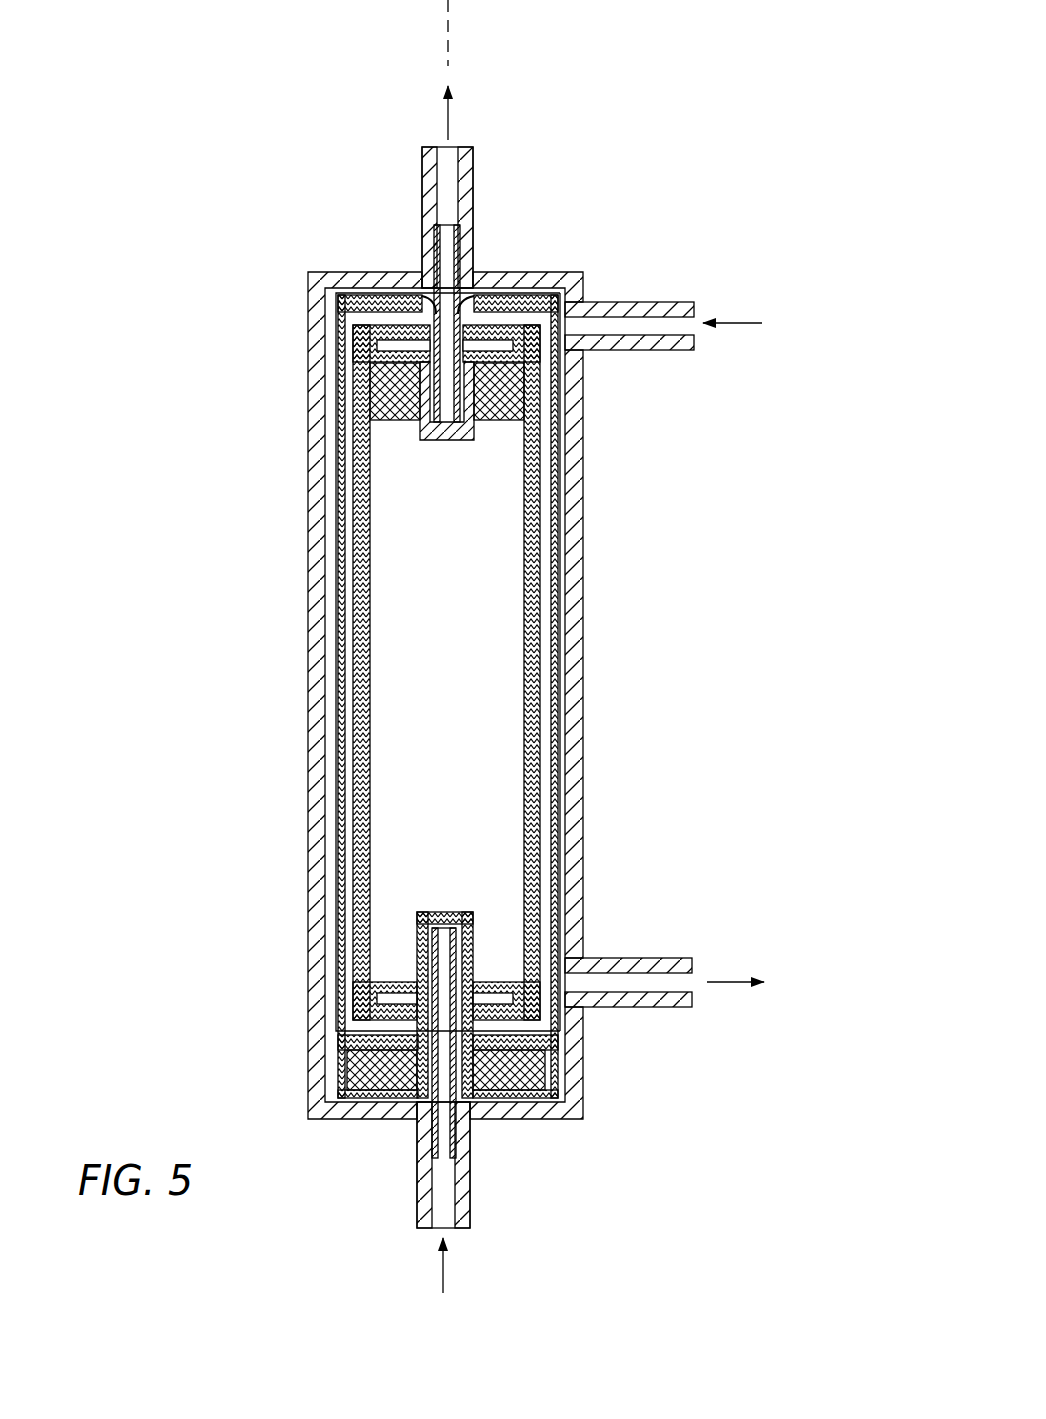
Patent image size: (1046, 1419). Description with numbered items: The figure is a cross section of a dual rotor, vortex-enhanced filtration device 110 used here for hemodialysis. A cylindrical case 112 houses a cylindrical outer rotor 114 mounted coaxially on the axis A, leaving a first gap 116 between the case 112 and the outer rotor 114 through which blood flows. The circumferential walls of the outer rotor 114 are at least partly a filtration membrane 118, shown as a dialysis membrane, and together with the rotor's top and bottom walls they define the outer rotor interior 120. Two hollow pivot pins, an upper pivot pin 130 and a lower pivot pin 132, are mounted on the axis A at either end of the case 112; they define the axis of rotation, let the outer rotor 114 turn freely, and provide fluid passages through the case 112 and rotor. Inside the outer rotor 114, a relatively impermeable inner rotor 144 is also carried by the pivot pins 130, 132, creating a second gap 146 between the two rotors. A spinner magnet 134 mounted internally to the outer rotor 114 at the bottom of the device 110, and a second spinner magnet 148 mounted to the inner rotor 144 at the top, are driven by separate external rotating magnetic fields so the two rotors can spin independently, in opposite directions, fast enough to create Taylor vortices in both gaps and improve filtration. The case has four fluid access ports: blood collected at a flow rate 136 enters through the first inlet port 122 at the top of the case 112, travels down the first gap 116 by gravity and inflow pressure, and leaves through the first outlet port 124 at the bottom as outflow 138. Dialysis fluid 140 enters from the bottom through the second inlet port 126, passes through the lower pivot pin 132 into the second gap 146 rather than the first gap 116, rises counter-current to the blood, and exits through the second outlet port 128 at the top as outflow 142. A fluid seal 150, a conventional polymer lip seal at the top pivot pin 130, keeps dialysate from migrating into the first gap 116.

The filtration device 110 is at (690, 110).
The cylindrical case 112 is at (452, 695).
The outer rotor 114 is at (332, 745).
The first gap 116 is at (560, 668).
The filtration membrane 118 is at (558, 533).
The outer rotor interior 120 is at (543, 327).
The first inlet port 122 is at (637, 300).
The first outlet port 124 is at (650, 958).
The second inlet port 126 is at (417, 1230).
The second outlet port 128 is at (473, 146).
The upper pivot pin 130 is at (457, 245).
The lower pivot pin 132 is at (455, 1125).
The spinner magnet 134 is at (370, 1073).
The blood flow rate 136 is at (742, 322).
The outlet flow 138 is at (722, 980).
The dialysis fluid entry 140 is at (443, 1277).
The outlet flow 142 is at (448, 120).
The inner rotor 144 is at (348, 563).
The second gap 146 is at (545, 463).
The second spinner magnet 148 is at (397, 385).
The fluid seal 150 is at (410, 287).
The axis A is at (448, 28).